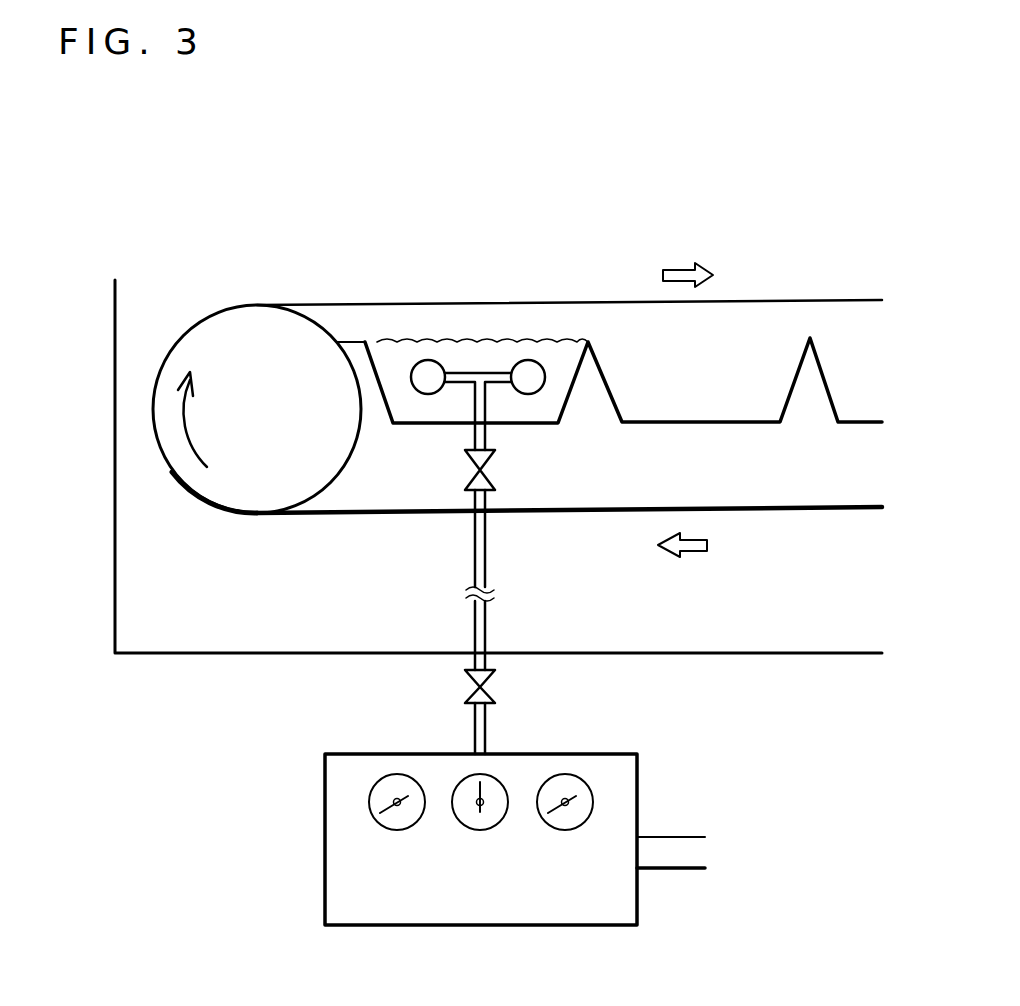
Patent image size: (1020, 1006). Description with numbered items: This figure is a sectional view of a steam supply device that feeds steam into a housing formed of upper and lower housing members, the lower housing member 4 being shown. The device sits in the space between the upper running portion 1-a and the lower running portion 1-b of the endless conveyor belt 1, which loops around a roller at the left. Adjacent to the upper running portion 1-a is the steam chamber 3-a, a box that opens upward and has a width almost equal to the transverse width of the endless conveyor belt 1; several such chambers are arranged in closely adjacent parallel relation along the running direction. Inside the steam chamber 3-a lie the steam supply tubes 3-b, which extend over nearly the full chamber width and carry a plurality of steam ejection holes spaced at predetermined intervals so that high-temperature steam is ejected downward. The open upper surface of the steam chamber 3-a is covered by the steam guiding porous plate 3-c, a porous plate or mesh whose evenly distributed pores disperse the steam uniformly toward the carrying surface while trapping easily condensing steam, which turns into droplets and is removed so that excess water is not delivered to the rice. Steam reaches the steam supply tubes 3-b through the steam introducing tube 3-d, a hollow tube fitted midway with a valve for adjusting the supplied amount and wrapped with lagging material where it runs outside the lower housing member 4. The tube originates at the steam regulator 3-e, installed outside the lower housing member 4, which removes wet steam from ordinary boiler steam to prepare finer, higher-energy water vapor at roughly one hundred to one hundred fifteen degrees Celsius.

The endless conveyor belt 1 is at (172, 472).
The upper running portion 1-a is at (330, 305).
The lower running portion 1-b is at (283, 513).
The steam chamber 3-a is at (533, 403).
The steam supply tubes 3-b is at (428, 362).
The steam guiding porous plate 3-c is at (522, 340).
The steam introducing tube 3-d is at (473, 525).
The steam regulator 3-e is at (340, 853).
The lower housing member 4 is at (150, 655).